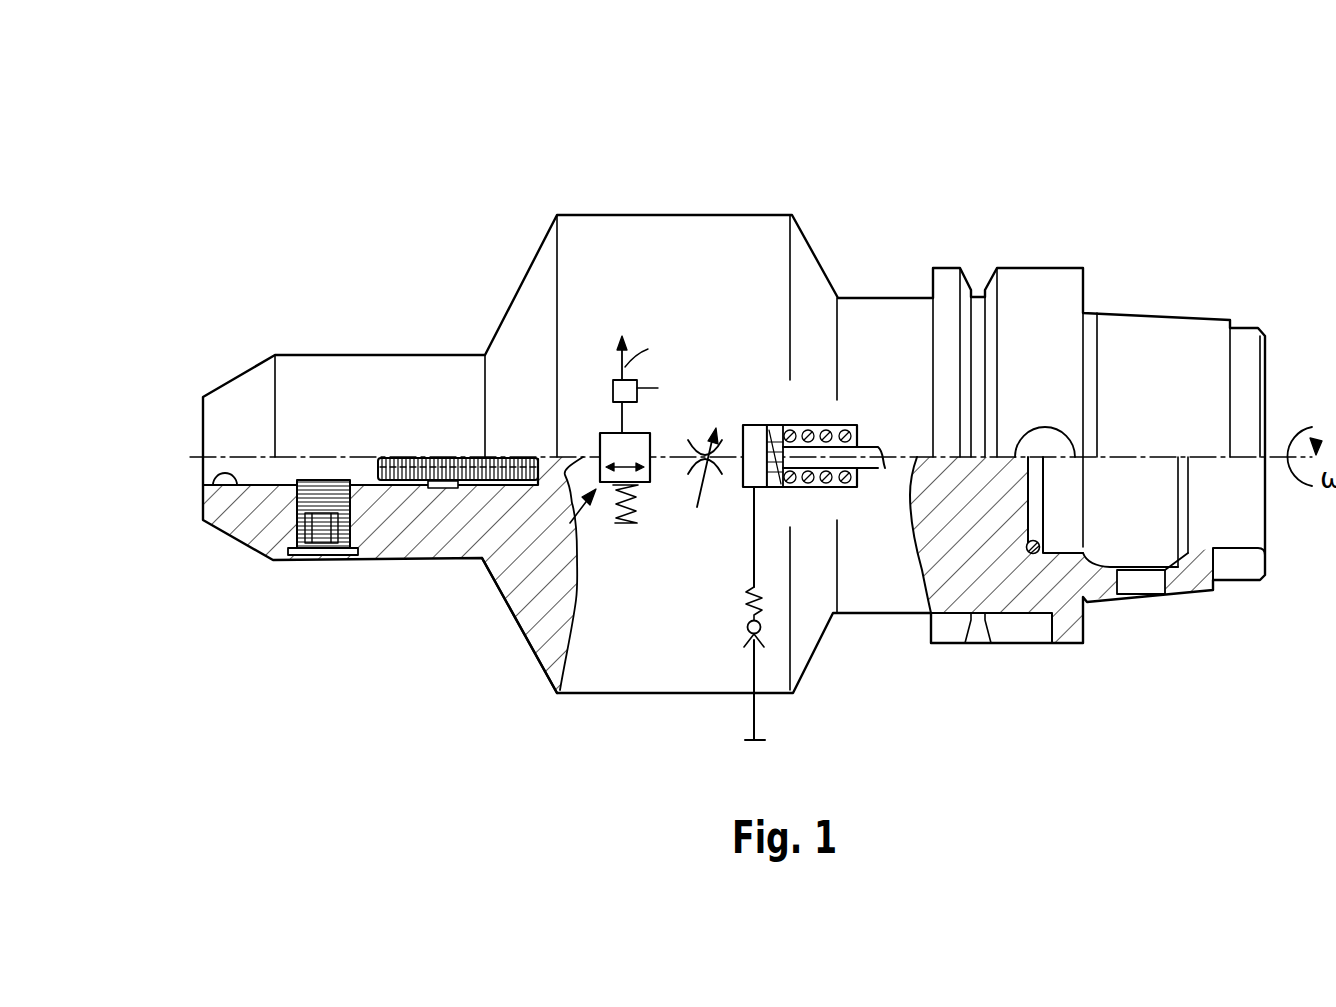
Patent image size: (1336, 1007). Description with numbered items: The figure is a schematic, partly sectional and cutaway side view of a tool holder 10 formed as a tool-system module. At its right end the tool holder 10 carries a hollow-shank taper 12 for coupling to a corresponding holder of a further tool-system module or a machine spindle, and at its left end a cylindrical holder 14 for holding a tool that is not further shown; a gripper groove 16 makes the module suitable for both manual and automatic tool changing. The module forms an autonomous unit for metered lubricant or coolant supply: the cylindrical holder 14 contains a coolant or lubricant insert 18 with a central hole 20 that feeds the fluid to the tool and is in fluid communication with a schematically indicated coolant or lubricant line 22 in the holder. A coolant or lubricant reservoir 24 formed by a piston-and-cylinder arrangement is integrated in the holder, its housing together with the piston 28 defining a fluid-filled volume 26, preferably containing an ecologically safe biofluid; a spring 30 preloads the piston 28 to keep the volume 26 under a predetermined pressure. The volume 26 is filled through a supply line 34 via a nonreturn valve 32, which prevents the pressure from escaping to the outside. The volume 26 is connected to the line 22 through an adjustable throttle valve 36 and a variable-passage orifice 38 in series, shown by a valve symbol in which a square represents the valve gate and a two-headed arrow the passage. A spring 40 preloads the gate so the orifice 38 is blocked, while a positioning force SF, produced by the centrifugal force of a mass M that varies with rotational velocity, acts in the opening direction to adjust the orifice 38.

The tool holder 10 is at (832, 182).
The hollow-shank taper 12 is at (1168, 340).
The cylindrical holder 14 is at (212, 477).
The gripper groove 16 is at (983, 262).
The coolant or lubricant insert 18 is at (470, 480).
The central hole 20 is at (440, 460).
The coolant or lubricant line 22 is at (583, 457).
The coolant or lubricant reservoir 24 is at (779, 410).
The volume 26 is at (753, 437).
The piston 28 is at (780, 487).
The spring 30 is at (840, 487).
The nonreturn valve 32 is at (745, 637).
The supply line 34 is at (752, 543).
The throttle valve 36 is at (707, 478).
The variable-passage orifice 38 is at (502, 592).
The spring 40 is at (617, 522).